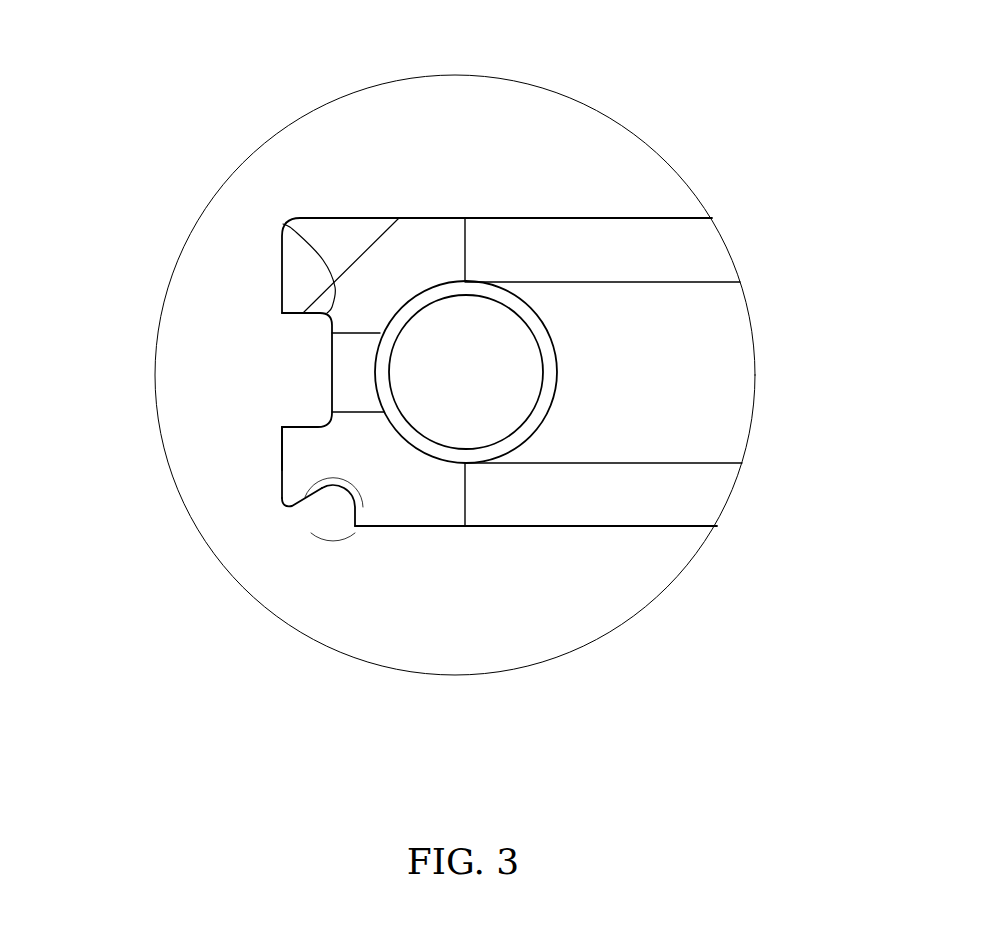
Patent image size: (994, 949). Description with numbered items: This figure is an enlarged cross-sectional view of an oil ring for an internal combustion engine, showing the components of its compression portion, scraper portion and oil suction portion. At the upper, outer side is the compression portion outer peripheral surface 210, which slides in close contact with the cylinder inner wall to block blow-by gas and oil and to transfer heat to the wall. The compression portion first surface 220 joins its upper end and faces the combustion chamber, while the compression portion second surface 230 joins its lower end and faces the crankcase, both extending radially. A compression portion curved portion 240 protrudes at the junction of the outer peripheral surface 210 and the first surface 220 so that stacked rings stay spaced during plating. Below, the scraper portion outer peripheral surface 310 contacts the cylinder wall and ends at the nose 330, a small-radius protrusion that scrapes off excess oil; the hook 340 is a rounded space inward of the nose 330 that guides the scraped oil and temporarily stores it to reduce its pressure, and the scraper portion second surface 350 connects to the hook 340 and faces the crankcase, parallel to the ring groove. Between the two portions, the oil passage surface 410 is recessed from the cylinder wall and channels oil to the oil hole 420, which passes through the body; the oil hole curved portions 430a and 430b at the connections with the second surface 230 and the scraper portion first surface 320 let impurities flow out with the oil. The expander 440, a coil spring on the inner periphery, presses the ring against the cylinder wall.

The compression portion outer peripheral surface 210 is at (282, 272).
The compression portion first surface 220 is at (355, 218).
The compression portion second surface 230 is at (305, 348).
The compression portion curved portion 240 is at (297, 218).
The scraper portion outer peripheral surface 310 is at (282, 460).
The scraper portion first surface 320 is at (297, 427).
The nose 330 is at (285, 505).
The hook 340 is at (313, 523).
The scraper portion second surface 350 is at (465, 483).
The oil passage surface 410 is at (333, 377).
The oil hole 420 is at (352, 387).
The oil hole curved portion 430a is at (283, 224).
The oil hole curved portion 430b is at (333, 420).
The expander 440 is at (524, 288).